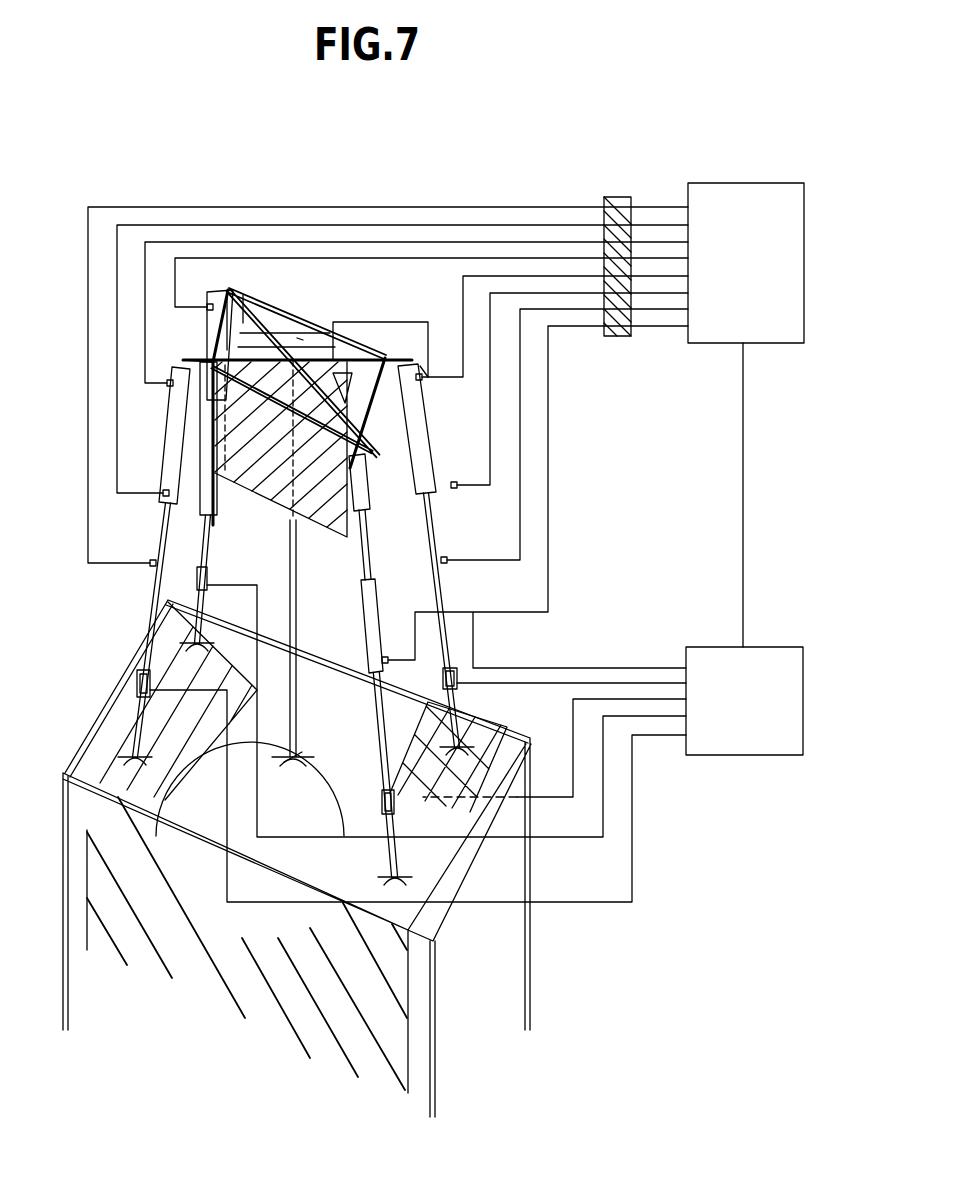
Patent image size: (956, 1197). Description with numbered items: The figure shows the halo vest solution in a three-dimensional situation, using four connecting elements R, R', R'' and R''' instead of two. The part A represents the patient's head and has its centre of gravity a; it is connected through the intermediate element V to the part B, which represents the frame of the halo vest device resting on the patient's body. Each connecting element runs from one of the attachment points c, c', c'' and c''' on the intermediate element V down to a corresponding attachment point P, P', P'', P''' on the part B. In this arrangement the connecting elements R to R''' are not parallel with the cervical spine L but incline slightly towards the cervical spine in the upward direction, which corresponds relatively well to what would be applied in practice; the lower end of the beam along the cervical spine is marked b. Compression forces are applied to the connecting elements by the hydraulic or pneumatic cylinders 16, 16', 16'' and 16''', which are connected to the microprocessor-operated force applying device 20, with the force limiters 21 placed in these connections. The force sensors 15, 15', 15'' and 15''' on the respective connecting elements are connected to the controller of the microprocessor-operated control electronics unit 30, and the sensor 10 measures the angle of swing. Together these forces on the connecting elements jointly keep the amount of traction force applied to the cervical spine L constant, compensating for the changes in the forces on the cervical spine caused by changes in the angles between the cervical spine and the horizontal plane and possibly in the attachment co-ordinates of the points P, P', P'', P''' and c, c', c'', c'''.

The sensor measuring angle of swing 10 is at (414, 396).
The force sensor 15 is at (89, 692).
The force sensor 15' is at (360, 790).
The force sensor 15'' is at (511, 664).
The force sensor 15''' is at (239, 576).
The hydraulic or pneumatic cylinder 16 is at (99, 435).
The hydraulic or pneumatic cylinder 16' is at (431, 563).
The hydraulic or pneumatic cylinder 16'' is at (510, 429).
The hydraulic or pneumatic cylinder 16''' is at (181, 280).
The force applying device 20 is at (783, 242).
The force limiter 21 is at (620, 270).
The control electronics unit 30 is at (780, 683).
The part representing the patient's head A is at (297, 338).
The part representing the frame resting on the patient's body B is at (345, 1010).
The cervical spine L is at (300, 625).
The attachment point on part B P is at (81, 767).
The attachment point on part B P' is at (438, 922).
The attachment point on part B P'' is at (500, 727).
The attachment point on part B P''' is at (128, 644).
The connecting element R is at (105, 630).
The connecting element R' is at (359, 774).
The connecting element R'' is at (478, 620).
The connecting element R''' is at (234, 579).
The intermediate element V is at (243, 295).
The centre of gravity a is at (288, 410).
The beam spot b is at (293, 770).
The attachment point on intermediate element c is at (125, 348).
The attachment point on intermediate element c' is at (383, 544).
The attachment point on intermediate element c'' is at (422, 329).
The attachment point on intermediate element c''' is at (243, 255).